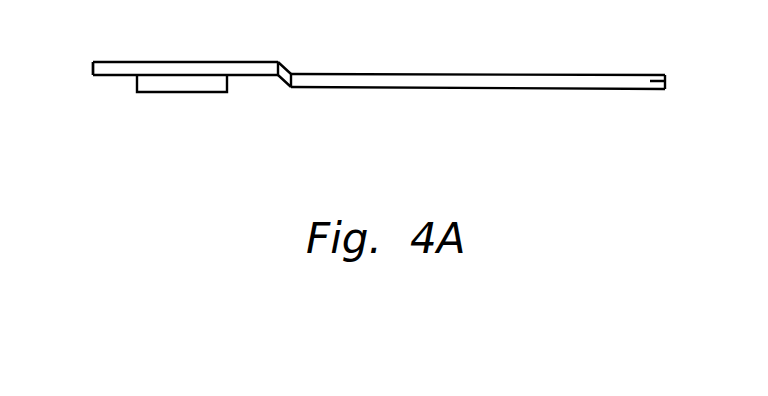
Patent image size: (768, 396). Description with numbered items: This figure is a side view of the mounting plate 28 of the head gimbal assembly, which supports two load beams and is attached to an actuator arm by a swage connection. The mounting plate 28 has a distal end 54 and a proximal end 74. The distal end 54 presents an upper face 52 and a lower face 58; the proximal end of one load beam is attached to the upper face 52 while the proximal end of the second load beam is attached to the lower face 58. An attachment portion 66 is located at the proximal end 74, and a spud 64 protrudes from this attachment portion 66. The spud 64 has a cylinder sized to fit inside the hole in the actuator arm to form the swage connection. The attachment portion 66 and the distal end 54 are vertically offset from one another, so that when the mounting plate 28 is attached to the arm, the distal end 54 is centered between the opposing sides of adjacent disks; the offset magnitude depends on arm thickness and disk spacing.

The mounting plate 28 is at (395, 106).
The upper face 52 is at (578, 75).
The distal end 54 is at (667, 80).
The lower face 58 is at (552, 90).
The spud 64 is at (230, 93).
The attachment portion 66 is at (197, 62).
The proximal end 74 is at (107, 66).